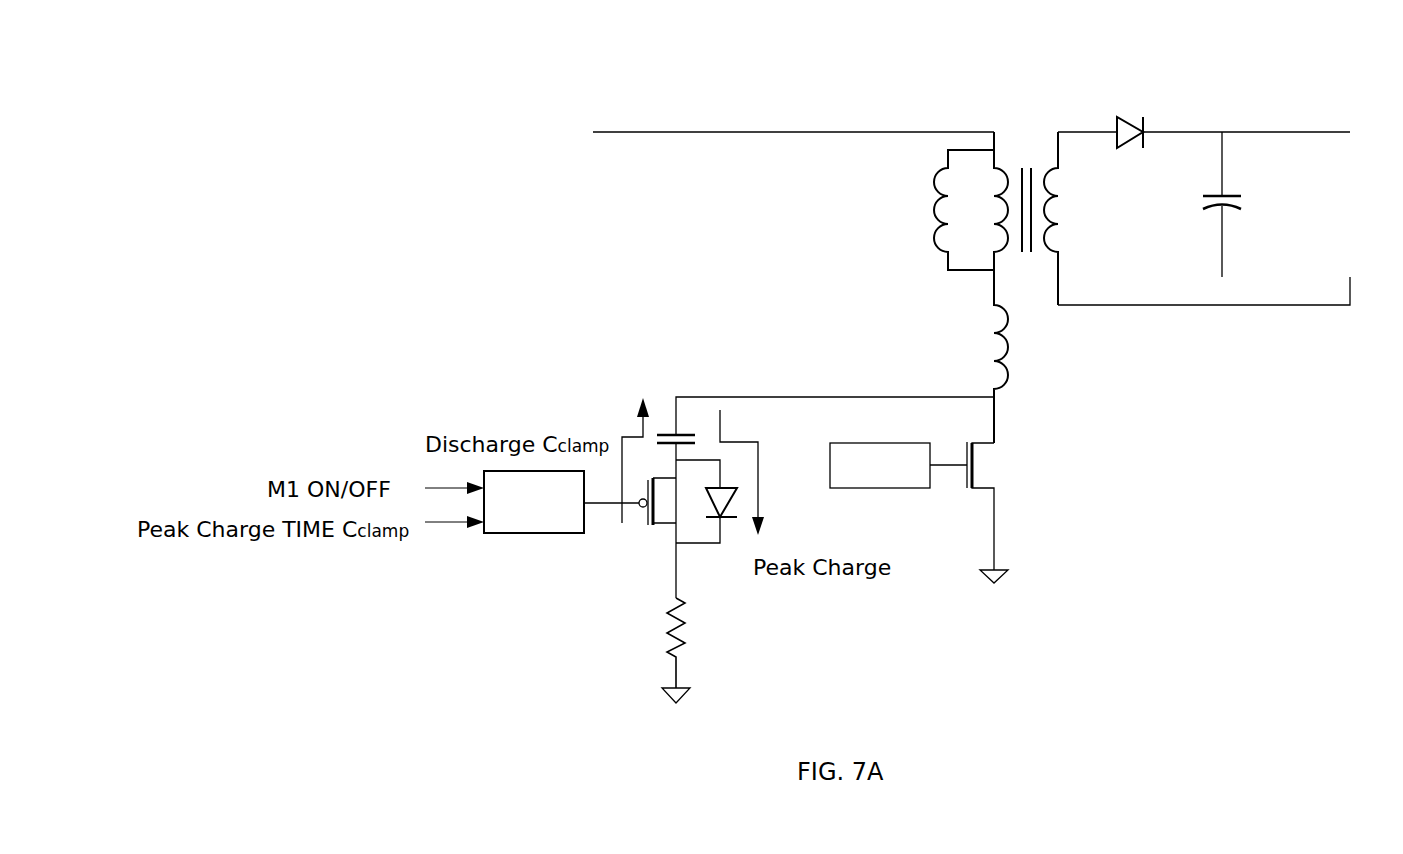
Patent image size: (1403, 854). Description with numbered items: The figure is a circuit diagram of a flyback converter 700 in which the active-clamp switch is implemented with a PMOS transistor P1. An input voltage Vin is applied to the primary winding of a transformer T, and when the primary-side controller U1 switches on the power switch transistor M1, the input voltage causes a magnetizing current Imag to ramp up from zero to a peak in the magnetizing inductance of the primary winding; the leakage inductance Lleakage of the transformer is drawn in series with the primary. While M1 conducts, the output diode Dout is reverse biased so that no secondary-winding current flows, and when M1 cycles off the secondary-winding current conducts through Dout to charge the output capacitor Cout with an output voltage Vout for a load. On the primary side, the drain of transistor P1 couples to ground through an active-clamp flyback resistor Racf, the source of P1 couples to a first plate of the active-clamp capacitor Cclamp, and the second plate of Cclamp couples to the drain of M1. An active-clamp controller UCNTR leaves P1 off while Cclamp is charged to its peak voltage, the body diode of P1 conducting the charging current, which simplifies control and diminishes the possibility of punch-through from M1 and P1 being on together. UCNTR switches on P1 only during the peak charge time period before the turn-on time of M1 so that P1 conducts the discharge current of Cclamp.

The flyback converter 700 is at (446, 130).
The input voltage Vin is at (788, 116).
The transformer T is at (972, 211).
The magnetizing current Imag is at (947, 201).
The output diode Dout is at (1204, 118).
The output voltage Vout is at (1212, 202).
The output capacitor Cout is at (1249, 204).
The leakage inductance Lleakage is at (1045, 356).
The power switch transistor M1 is at (982, 512).
The primary-side controller U1 is at (880, 465).
The active-clamp capacitor Cclamp is at (822, 484).
The PMOS transistor P1 is at (660, 516).
The active-clamp flyback resistor Racf is at (713, 650).
The active-clamp controller UCNTR is at (534, 502).